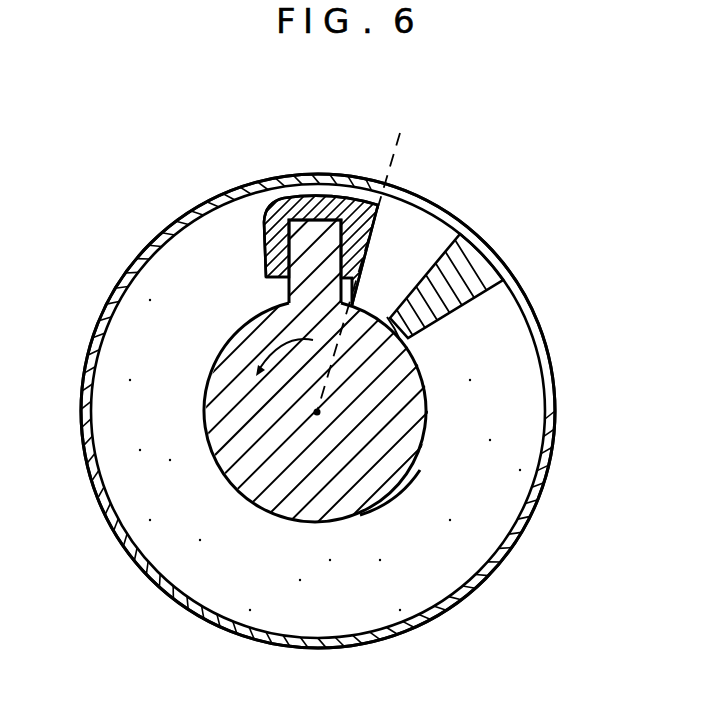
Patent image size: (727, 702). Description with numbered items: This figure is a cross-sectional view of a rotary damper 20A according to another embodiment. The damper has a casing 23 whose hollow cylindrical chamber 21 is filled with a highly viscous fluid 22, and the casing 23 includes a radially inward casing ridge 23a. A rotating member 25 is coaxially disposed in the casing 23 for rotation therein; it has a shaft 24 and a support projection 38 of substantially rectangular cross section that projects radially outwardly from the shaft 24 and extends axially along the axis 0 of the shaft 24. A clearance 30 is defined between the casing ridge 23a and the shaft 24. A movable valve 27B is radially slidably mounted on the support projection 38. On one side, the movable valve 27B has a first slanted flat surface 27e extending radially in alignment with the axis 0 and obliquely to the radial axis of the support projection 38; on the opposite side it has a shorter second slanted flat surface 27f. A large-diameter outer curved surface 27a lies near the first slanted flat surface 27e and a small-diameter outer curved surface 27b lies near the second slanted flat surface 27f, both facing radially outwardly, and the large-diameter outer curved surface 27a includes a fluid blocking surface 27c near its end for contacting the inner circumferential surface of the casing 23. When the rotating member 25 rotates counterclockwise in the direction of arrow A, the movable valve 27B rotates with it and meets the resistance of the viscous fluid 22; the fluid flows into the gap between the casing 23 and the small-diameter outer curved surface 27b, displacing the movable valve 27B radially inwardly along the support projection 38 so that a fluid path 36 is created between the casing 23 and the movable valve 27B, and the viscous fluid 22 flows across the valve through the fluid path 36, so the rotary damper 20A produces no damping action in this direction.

The rotary damper 20A is at (79, 333).
The hollow cylindrical chamber 21 is at (273, 589).
The viscous fluid 22 is at (372, 602).
The casing 23 is at (232, 628).
The casing ridge 23a is at (458, 302).
The shaft 24 is at (229, 449).
The rotating member 25 is at (392, 504).
The large-diameter outer curved surface 27a is at (307, 196).
The movable valve 27B is at (328, 207).
The small-diameter outer curved surface 27b is at (276, 219).
The fluid blocking surface 27c is at (378, 205).
The first slanted flat surface 27e is at (378, 227).
The second slanted flat surface 27f is at (263, 266).
The clearance 30 is at (398, 338).
The fluid path 36 is at (353, 236).
The support projection 38 is at (313, 252).
The axis 0 is at (317, 412).
The arrow A is at (272, 350).